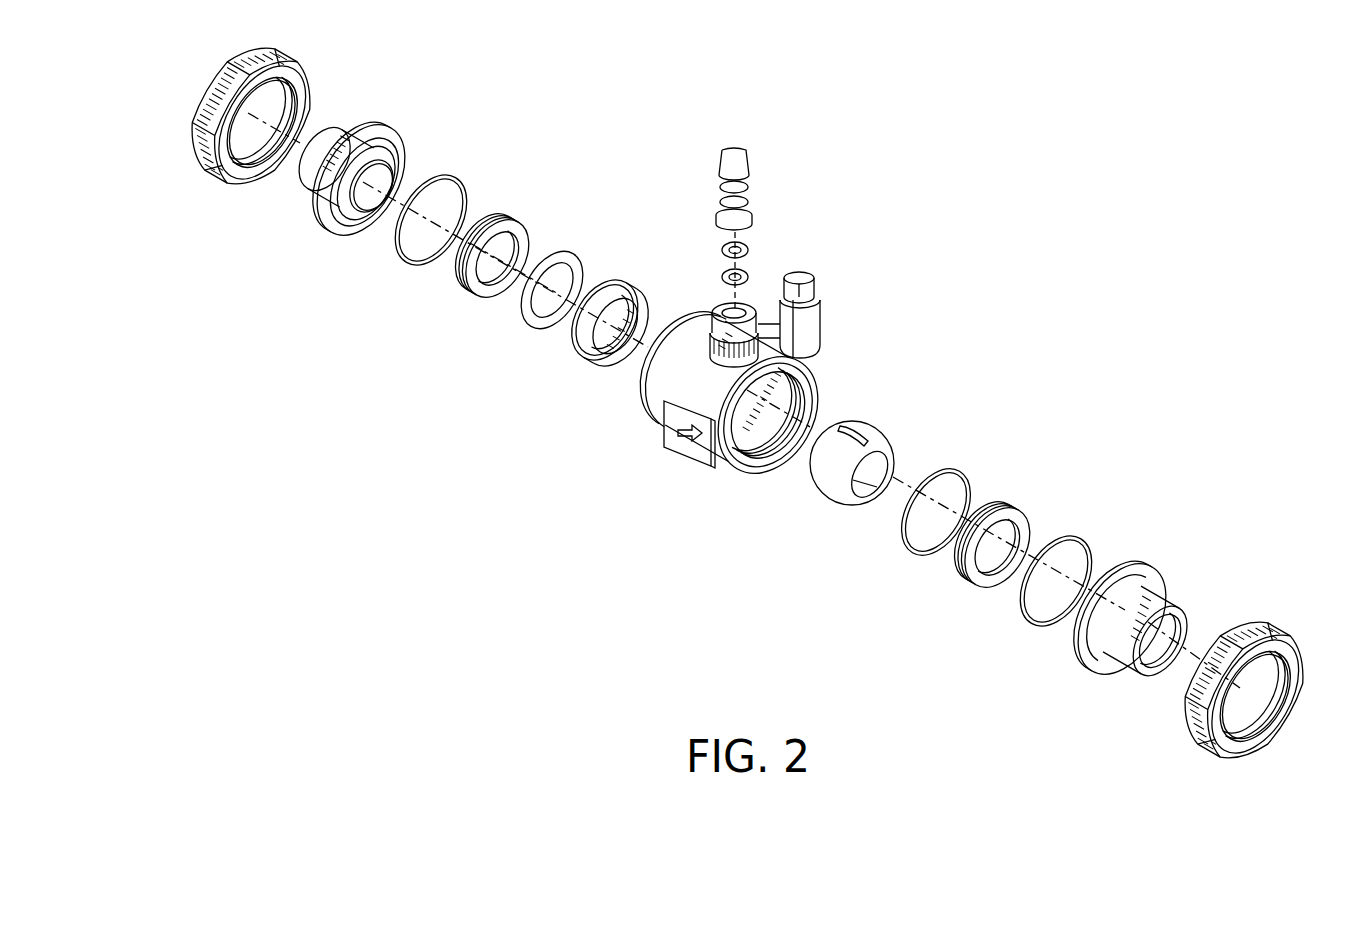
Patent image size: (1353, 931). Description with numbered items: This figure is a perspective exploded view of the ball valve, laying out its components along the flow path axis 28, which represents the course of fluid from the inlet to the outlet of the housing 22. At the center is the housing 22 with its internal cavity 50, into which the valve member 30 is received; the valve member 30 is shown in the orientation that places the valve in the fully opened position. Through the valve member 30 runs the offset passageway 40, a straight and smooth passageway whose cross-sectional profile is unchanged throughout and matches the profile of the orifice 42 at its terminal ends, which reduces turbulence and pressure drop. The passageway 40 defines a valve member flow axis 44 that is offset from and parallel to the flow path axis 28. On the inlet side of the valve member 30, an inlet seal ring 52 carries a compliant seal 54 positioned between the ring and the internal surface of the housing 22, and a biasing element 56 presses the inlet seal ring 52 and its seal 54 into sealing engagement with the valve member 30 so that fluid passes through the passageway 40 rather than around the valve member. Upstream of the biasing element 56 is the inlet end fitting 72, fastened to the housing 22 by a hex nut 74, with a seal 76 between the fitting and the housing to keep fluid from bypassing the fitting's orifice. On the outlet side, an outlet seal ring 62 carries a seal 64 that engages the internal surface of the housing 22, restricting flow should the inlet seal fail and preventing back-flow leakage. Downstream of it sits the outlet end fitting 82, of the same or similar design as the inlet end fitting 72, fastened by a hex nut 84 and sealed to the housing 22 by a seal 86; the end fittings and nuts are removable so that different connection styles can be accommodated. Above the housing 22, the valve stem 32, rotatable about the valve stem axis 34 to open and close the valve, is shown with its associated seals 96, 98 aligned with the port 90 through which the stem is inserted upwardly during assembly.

The housing 22 is at (662, 377).
The flow path axis 28 is at (523, 270).
The valve member 30 is at (814, 476).
The valve stem 32 is at (720, 192).
The valve stem axis 34 is at (728, 297).
The offset passageway 40 is at (883, 458).
The orifice 42 is at (862, 503).
The valve member flow axis 44 is at (893, 500).
The internal cavity 50 is at (797, 404).
The inlet seal ring 52 is at (582, 350).
The compliant seal 54 is at (533, 328).
The biasing element 56 is at (462, 282).
The outlet seal ring 62 is at (1004, 500).
The seal 64 is at (962, 472).
The inlet end fitting 72 is at (320, 220).
The hex nut 74 is at (216, 184).
The seal 76 is at (397, 256).
The outlet end fitting 82 is at (1138, 563).
The hex nut 84 is at (1243, 617).
The seal 86 is at (1083, 538).
The port 90 is at (758, 318).
The seal 96 is at (750, 248).
The seal 98 is at (722, 277).